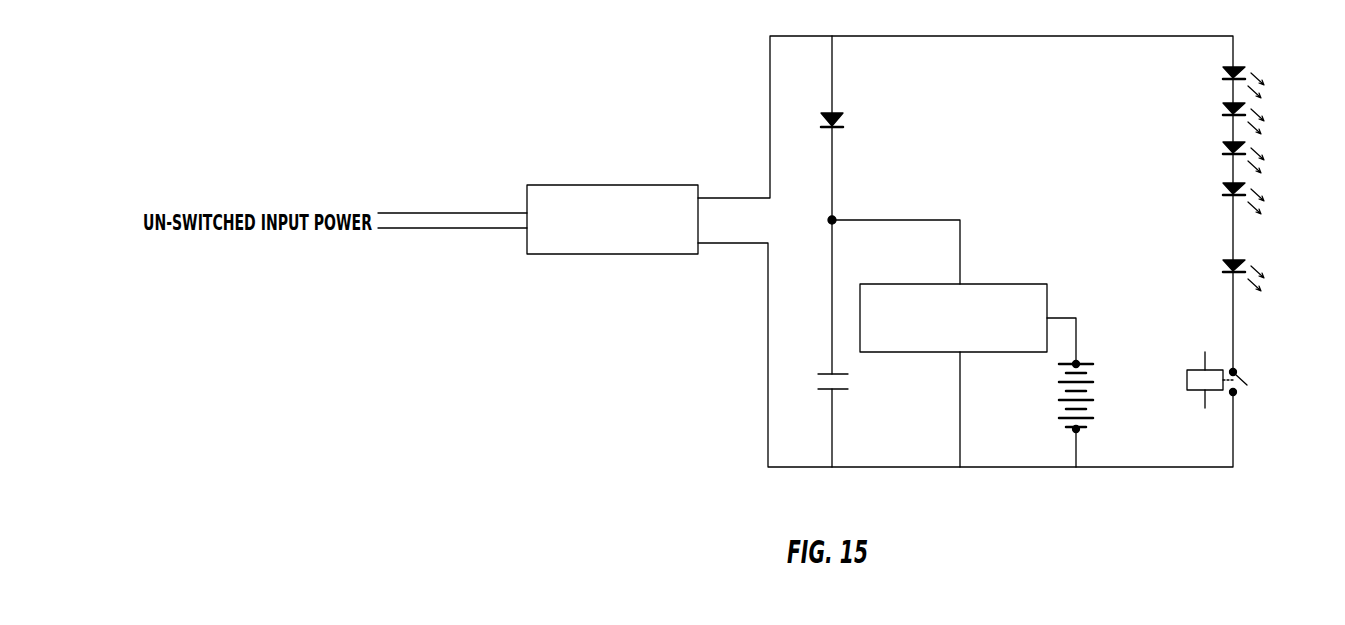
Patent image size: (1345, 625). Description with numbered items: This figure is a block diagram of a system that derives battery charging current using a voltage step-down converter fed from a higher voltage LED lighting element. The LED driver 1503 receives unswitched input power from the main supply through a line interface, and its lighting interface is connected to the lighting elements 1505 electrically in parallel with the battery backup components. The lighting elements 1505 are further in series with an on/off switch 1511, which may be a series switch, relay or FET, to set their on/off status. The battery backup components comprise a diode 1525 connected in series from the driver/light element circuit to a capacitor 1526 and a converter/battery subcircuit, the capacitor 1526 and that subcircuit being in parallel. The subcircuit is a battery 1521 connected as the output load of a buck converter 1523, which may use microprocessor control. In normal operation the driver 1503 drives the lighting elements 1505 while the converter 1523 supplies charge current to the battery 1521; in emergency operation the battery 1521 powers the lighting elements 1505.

The LED driver 1503 is at (591, 233).
The lighting elements 1505 is at (1258, 198).
The on/off switch 1511 is at (1236, 395).
The battery 1521 is at (1092, 375).
The buck converter 1523 is at (975, 332).
The diode 1525 is at (845, 125).
The capacitor 1526 is at (846, 391).